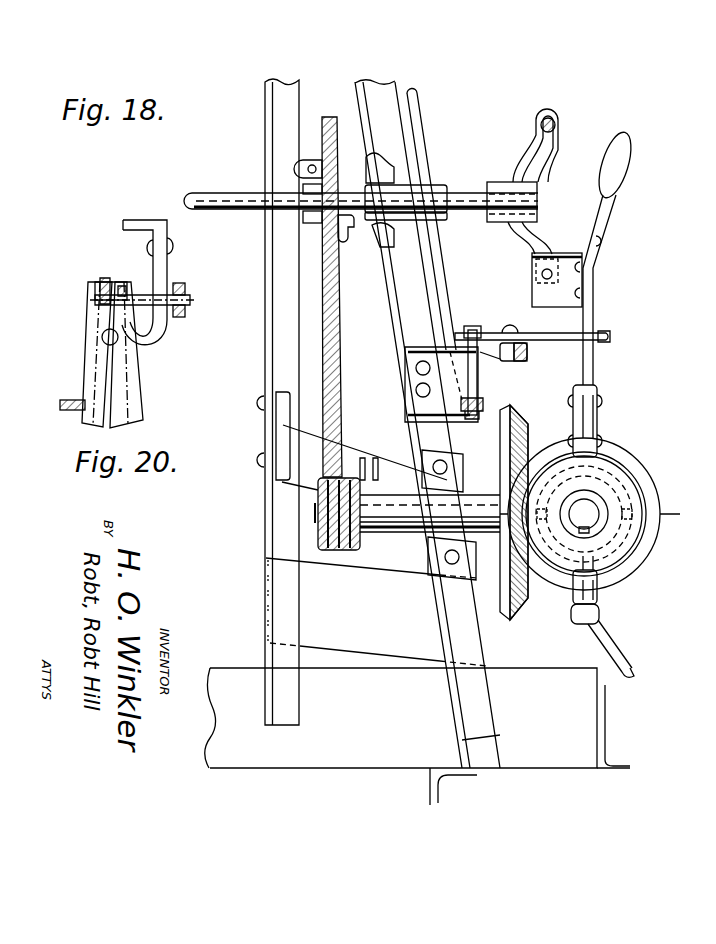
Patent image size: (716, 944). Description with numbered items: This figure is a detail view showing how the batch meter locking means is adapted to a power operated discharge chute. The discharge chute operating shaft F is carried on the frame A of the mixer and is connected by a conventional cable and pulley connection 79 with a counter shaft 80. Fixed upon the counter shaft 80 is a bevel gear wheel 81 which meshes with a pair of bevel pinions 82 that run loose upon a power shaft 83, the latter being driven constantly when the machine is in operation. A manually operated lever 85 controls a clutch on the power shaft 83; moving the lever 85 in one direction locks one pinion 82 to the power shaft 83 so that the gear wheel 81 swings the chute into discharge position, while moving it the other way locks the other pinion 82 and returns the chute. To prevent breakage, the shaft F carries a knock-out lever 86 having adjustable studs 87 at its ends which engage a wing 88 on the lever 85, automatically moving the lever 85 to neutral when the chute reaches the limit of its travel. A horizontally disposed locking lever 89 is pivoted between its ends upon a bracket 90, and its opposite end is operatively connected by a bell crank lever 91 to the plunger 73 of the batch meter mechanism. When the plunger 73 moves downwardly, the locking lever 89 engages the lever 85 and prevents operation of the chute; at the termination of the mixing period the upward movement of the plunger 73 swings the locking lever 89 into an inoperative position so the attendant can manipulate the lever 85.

In FIG. 18, the frame A is at (265, 98).
In FIG. 18, the discharge chute operating shaft F is at (196, 196).
In FIG. 18, the plunger 73 is at (418, 120).
In FIG. 20, the plunger 73 is at (183, 292).
In FIG. 18, the cable and pulley connection 79 is at (322, 330).
In FIG. 18, the counter shaft 80 is at (315, 511).
In FIG. 18, the bevel gear wheel 81 is at (518, 620).
In FIG. 18, the bevel pinions 82 is at (646, 482).
In FIG. 18, the power shaft 83 is at (596, 518).
In FIG. 18, the lever 85 is at (600, 248).
In FIG. 20, the lever 85 is at (66, 410).
In FIG. 18, the knock-out lever 86 is at (532, 139).
In FIG. 18, the adjustable studs 87 is at (556, 119).
In FIG. 18, the wing 88 is at (532, 290).
In FIG. 18, the locking lever 89 is at (600, 334).
In FIG. 20, the locking lever 89 is at (90, 370).
In FIG. 18, the bracket 90 is at (482, 354).
In FIG. 20, the bracket 90 is at (150, 355).
In FIG. 18, the bell crank lever 91 is at (482, 406).
In FIG. 20, the bell crank lever 91 is at (134, 283).